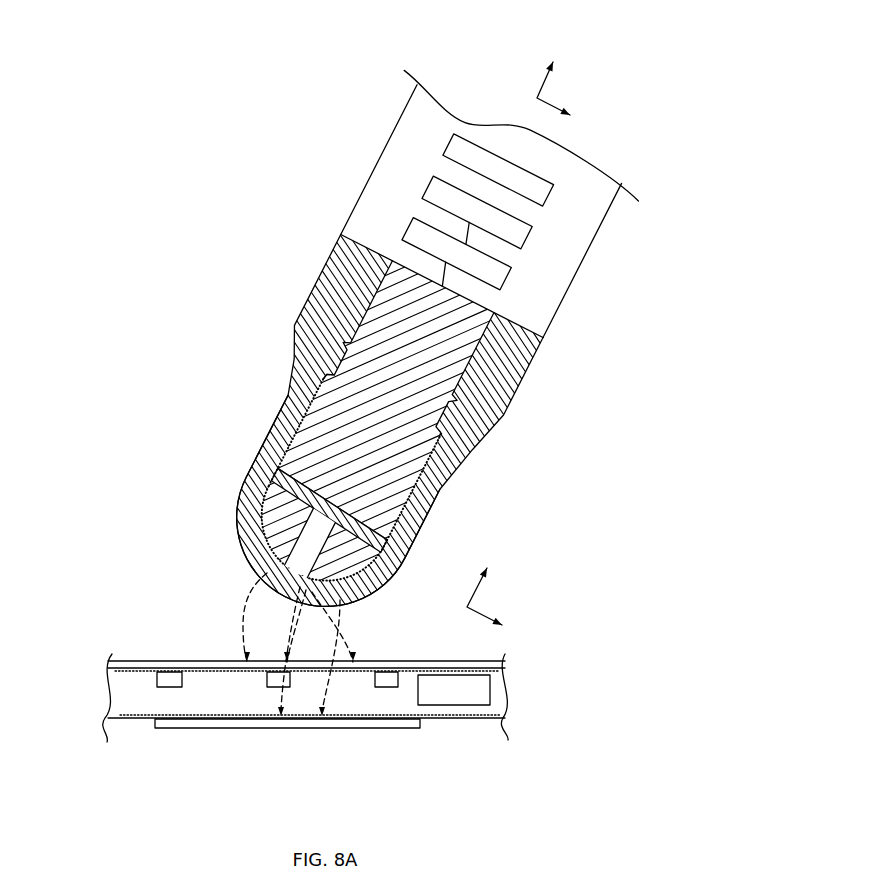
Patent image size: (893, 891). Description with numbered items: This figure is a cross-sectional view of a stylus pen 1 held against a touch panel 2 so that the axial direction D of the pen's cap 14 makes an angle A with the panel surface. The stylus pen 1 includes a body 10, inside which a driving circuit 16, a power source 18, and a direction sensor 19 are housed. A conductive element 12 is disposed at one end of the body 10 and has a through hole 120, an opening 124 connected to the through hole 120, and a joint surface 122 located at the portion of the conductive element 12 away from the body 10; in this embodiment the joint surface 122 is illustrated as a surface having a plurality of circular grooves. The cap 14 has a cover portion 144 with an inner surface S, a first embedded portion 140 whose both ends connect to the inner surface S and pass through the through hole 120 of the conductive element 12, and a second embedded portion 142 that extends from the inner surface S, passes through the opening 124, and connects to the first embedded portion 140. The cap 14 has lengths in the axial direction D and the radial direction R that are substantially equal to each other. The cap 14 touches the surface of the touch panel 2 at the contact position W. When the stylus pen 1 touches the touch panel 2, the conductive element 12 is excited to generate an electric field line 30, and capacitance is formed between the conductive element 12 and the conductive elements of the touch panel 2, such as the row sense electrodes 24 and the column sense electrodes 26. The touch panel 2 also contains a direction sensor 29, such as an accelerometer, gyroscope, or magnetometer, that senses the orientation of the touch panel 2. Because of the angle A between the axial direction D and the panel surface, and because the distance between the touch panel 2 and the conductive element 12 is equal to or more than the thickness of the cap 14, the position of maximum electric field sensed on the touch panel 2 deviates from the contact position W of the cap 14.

The stylus pen 1 is at (337, 63).
The touch panel 2 is at (143, 652).
The body 10 is at (538, 318).
The conductive element 12 is at (460, 338).
The cap 14 is at (429, 486).
The driving circuit 16 is at (502, 280).
The power source 18 is at (533, 240).
The direction sensor 19 is at (543, 195).
The row sense electrodes 24 is at (190, 722).
The column sense electrodes 26 is at (157, 680).
The direction sensor 29 is at (483, 690).
The electric field line 30 is at (243, 620).
The through hole 120 is at (400, 538).
The joint surface 122 is at (368, 580).
The opening 124 is at (290, 572).
The first embedded portion 140 is at (278, 480).
The second embedded portion 142 is at (262, 516).
The cover portion 144 is at (263, 558).
The inner surface S is at (284, 433).
The contact position W is at (248, 662).
The angle A is at (276, 632).
The axial direction D is at (518, 331).
The radial direction R is at (549, 376).